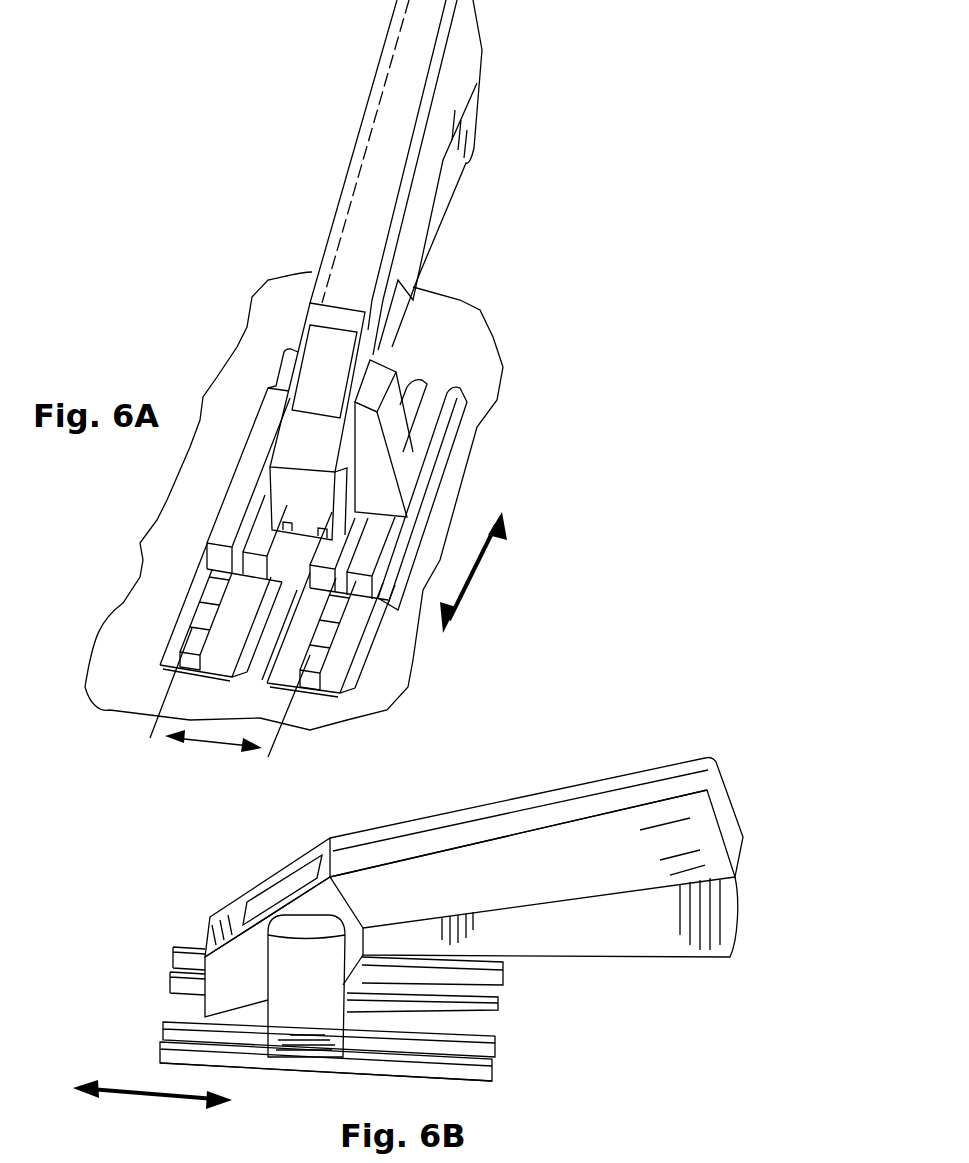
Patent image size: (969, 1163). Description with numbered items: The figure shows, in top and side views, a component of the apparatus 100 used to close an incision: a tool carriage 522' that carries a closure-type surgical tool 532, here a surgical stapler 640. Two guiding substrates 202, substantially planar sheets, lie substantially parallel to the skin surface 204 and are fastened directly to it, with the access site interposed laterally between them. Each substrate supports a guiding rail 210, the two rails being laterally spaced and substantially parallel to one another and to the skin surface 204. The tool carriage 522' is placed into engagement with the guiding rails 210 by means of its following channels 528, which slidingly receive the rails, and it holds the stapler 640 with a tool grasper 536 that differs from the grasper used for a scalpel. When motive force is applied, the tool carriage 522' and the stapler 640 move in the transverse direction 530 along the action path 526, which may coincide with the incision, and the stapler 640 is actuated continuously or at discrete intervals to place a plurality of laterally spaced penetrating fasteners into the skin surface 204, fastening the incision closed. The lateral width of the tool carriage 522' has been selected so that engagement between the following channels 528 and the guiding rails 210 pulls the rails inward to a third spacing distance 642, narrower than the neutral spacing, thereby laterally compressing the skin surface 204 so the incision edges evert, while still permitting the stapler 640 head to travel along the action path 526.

In FIG. 6A, the apparatus 100 is at (593, 448).
In FIG. 6B, the apparatus 100 is at (770, 828).
In FIG. 6A, the guiding substrate 202 is at (193, 602).
In FIG. 6A, the skin surface 204 is at (453, 478).
In FIG. 6A, the guiding rail 210 is at (190, 643).
In FIG. 6A, the tool carriage 522' is at (475, 495).
In FIG. 6B, the tool carriage 522' is at (326, 1104).
In FIG. 6A, the action path 526 is at (280, 633).
In FIG. 6B, the following channel 528 is at (430, 983).
In FIG. 6A, the transverse direction 530 is at (472, 585).
In FIG. 6B, the transverse direction 530 is at (158, 1097).
In FIG. 6A, the surgical tool 532 is at (455, 259).
In FIG. 6A, the tool grasper 536 is at (395, 370).
In FIG. 6B, the tool grasper 536 is at (323, 1000).
In FIG. 6A, the surgical stapler 640 is at (395, 205).
In FIG. 6B, the surgical stapler 640 is at (490, 886).
In FIG. 6A, the third spacing distance 642 is at (218, 747).